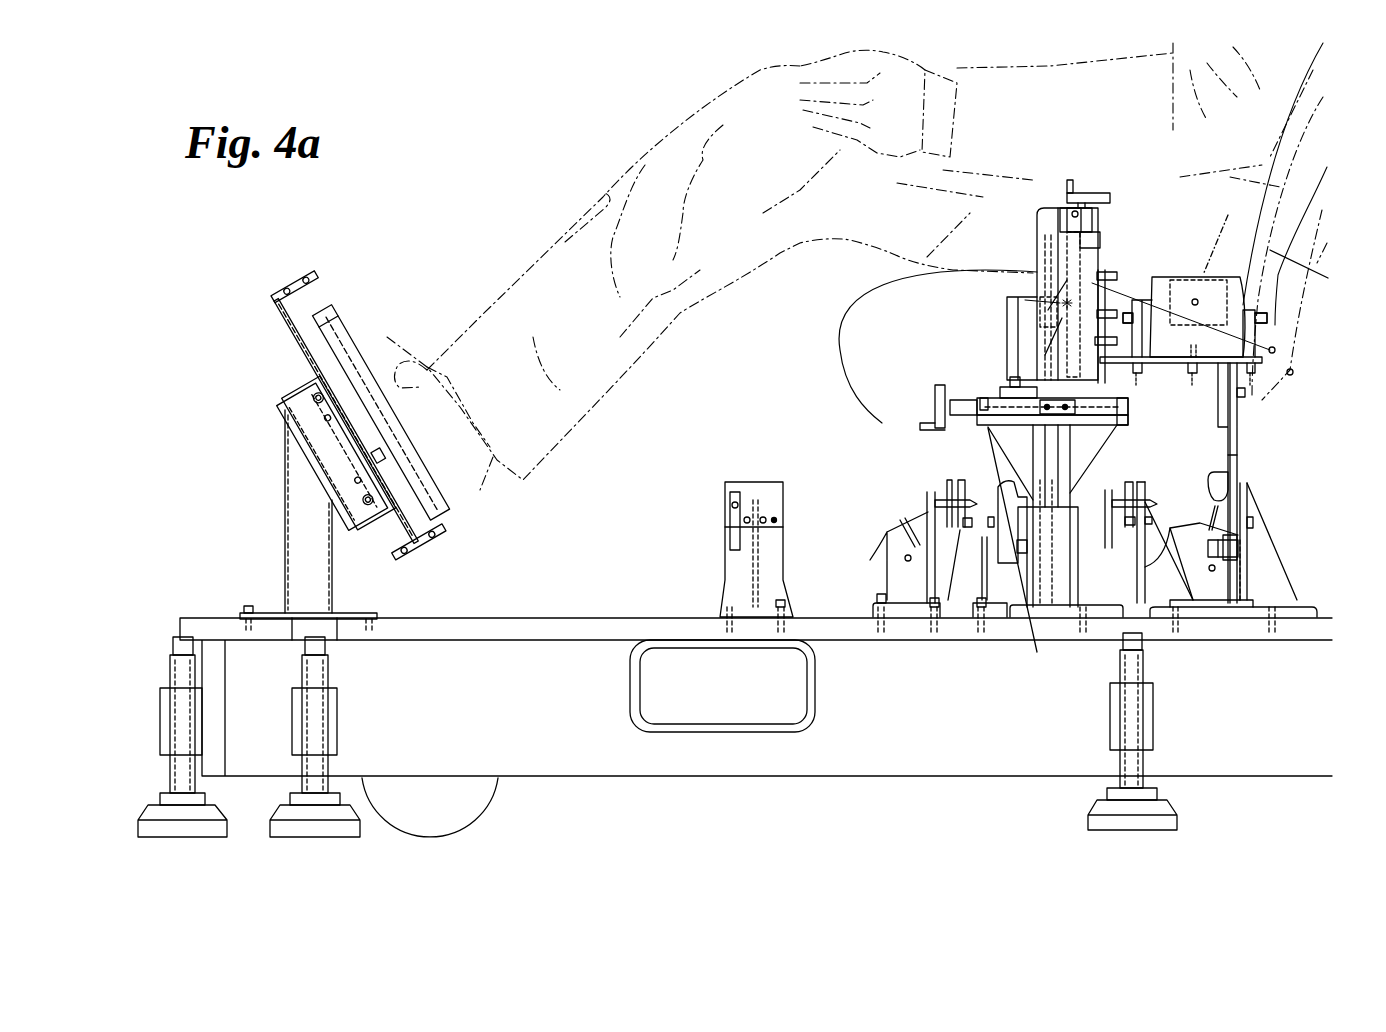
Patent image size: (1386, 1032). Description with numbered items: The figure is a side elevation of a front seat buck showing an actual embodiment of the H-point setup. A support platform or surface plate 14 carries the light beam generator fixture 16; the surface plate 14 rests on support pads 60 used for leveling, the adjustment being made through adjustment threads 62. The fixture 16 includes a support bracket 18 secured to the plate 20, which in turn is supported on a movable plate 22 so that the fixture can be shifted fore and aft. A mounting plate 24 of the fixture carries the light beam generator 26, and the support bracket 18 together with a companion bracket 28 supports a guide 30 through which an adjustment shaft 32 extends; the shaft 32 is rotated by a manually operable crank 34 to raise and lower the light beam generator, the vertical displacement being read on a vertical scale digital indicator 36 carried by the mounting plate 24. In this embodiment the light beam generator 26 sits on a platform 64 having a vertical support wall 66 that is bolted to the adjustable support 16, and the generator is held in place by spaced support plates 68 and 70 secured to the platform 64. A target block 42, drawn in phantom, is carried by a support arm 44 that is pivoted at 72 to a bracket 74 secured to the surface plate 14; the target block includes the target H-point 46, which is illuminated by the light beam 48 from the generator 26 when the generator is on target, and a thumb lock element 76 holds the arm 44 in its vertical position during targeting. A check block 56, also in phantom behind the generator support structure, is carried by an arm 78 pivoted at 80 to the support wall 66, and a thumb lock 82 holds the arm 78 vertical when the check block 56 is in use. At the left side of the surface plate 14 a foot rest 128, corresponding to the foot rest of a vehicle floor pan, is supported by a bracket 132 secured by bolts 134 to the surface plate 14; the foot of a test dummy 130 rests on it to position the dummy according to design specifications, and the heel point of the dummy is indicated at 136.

The surface plate 14 is at (1235, 633).
The light beam generator fixture 16 is at (1120, 367).
The support bracket 18 is at (1010, 340).
The plate 20 is at (1128, 400).
The movable plate 22 is at (1100, 457).
The mounting plate 24 is at (1100, 240).
The light beam generator 26 is at (1160, 292).
The companion bracket 28 is at (1067, 476).
The guide 30 is at (1098, 250).
The adjustment shaft 32 is at (1107, 193).
The crank 34 is at (1067, 188).
The vertical scale digital indicator 36 is at (1060, 258).
The target block 42 is at (1225, 234).
The support arm 44 is at (1238, 467).
The target H-point 46 is at (1245, 303).
The light beam 48 is at (163, 717).
The check block 56 is at (1025, 300).
The support pads 60 is at (1132, 720).
The adjustment threads 62 is at (1140, 768).
The platform 64 is at (1177, 367).
The vertical support wall 66 is at (1125, 312).
The support plate 68 is at (1133, 320).
The support plate 70 is at (1301, 245).
The pivot 72 is at (1255, 527).
The bracket 74 is at (1250, 585).
The thumb lock element 76 is at (1225, 490).
The arm 78 is at (1022, 300).
The pivot 80 is at (1027, 545).
The thumb lock 82 is at (1005, 487).
The foot rest 128 is at (346, 393).
The foot of a test dummy 130 is at (387, 447).
The bracket 132 is at (298, 537).
The bolts 134 is at (243, 610).
The heel point 136 is at (428, 515).